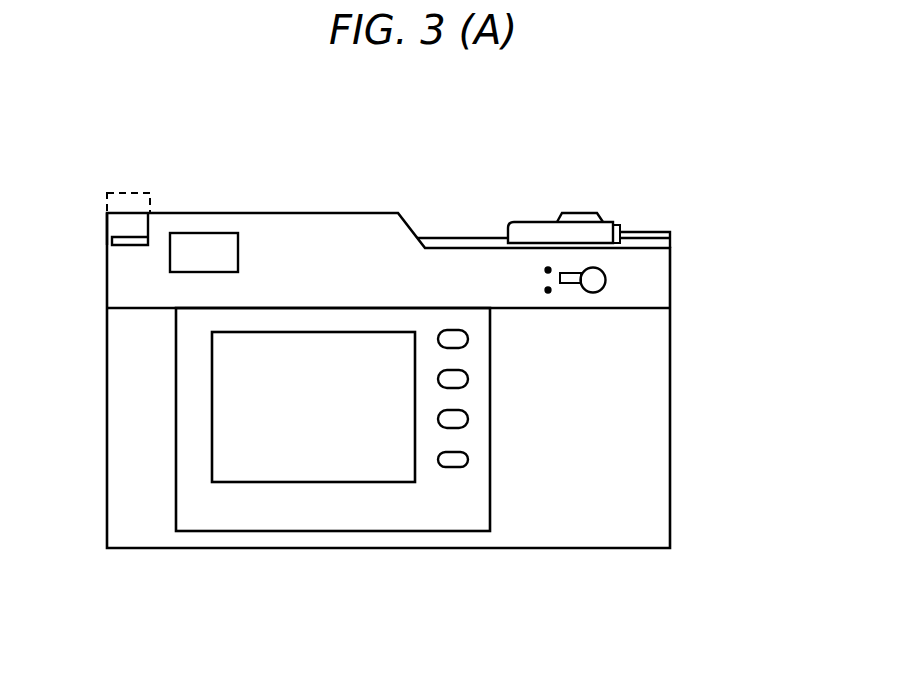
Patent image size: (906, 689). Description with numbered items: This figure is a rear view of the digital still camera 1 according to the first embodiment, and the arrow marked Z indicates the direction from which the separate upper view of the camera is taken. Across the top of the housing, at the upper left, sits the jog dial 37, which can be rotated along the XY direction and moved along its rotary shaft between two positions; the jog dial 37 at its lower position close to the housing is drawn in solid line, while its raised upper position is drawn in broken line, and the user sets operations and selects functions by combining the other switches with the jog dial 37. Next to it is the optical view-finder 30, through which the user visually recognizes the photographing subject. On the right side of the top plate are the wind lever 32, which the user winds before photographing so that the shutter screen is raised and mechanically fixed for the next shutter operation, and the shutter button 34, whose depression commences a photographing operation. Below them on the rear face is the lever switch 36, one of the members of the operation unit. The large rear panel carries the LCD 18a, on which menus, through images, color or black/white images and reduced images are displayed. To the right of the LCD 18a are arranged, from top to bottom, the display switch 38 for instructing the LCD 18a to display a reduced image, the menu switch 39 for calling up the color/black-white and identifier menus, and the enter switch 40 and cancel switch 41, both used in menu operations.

The digital still camera 1 is at (317, 208).
The Z direction Z is at (113, 128).
The jog dial 37 is at (105, 202).
The optical view-finder 30 is at (193, 247).
The wind lever 32 is at (590, 230).
The shutter button 34 is at (577, 212).
The lever switch 36 is at (607, 282).
The display switch 38 is at (458, 341).
The menu switch 39 is at (458, 382).
The enter switch 40 is at (453, 420).
The cancel switch 41 is at (450, 463).
The LCD 18a is at (293, 462).